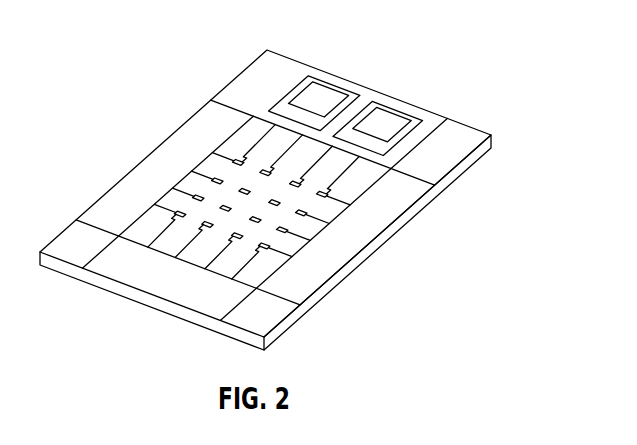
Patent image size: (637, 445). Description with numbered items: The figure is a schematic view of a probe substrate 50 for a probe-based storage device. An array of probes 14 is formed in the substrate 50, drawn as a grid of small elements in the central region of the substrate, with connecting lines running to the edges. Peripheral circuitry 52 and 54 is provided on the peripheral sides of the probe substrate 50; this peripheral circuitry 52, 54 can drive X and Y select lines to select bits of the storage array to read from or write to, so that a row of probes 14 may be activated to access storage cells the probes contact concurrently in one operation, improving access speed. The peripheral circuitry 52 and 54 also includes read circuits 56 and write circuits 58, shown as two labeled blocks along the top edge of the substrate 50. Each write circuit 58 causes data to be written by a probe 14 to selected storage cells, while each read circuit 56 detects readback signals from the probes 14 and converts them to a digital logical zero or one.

The probe 14 is at (283, 231).
The probe substrate 50 is at (397, 228).
The peripheral circuitry 52 is at (142, 178).
The peripheral circuitry 54 is at (446, 119).
The read circuit 56 is at (328, 91).
The write circuit 58 is at (383, 115).